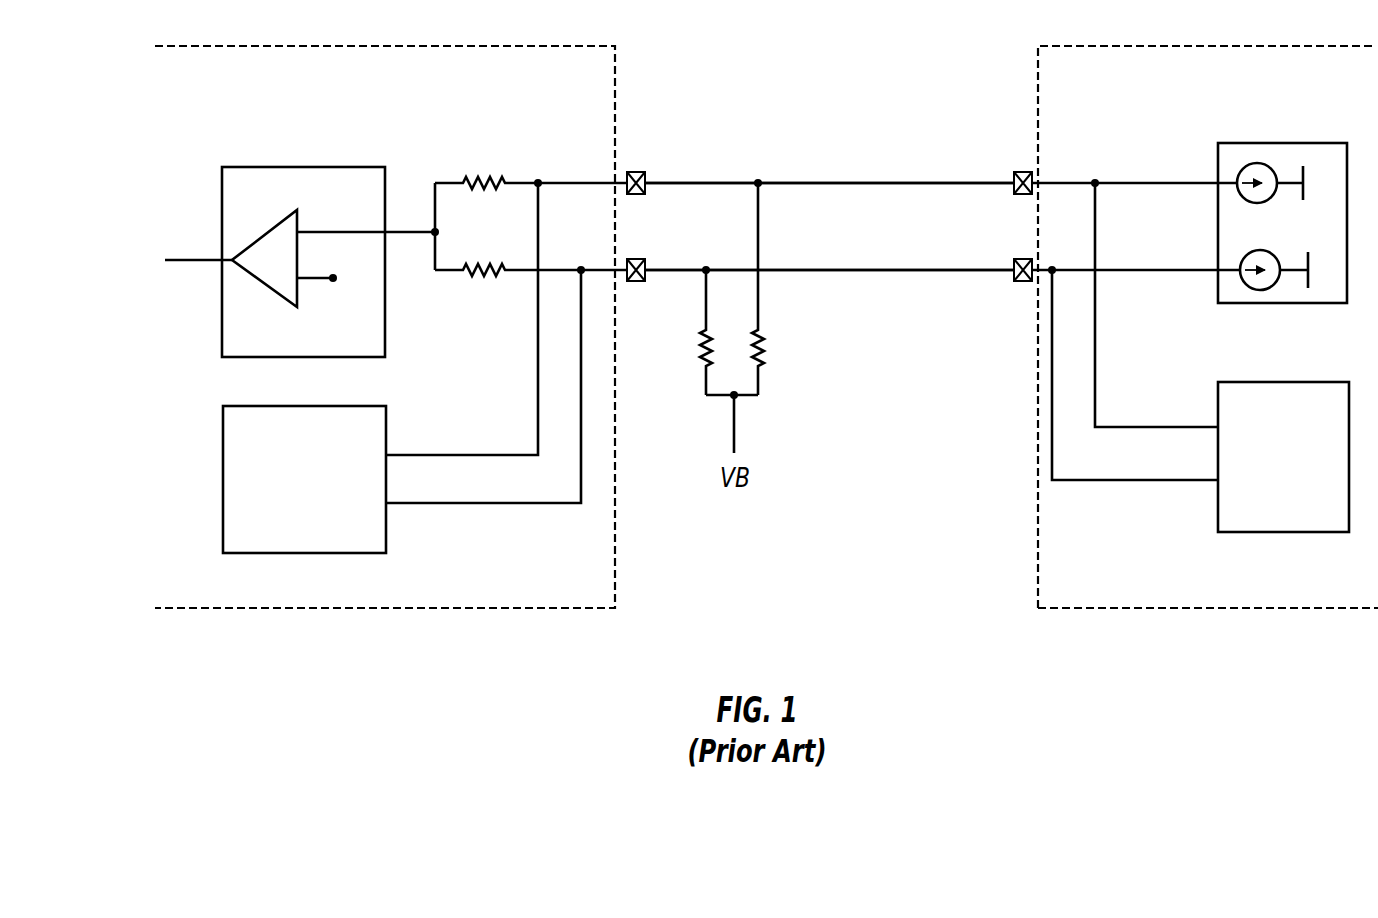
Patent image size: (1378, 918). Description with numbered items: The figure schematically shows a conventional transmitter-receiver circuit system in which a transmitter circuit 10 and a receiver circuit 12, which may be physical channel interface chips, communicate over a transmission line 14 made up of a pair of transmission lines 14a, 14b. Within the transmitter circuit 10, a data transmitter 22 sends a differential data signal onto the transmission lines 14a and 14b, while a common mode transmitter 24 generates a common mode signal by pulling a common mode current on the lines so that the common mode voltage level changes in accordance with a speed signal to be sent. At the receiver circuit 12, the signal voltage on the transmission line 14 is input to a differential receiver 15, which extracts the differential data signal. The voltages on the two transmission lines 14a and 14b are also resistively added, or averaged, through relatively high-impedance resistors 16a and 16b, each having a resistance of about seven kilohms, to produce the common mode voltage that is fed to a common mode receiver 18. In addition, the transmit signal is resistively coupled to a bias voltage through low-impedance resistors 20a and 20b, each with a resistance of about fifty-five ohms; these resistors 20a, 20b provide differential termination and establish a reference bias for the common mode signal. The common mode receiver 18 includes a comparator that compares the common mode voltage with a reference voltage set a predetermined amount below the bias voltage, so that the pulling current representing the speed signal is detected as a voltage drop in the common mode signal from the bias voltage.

The transmitter circuit 10 is at (1039, 560).
The receiver circuit 12 is at (617, 574).
The transmission line 14 is at (830, 179).
The transmission line 14a is at (892, 183).
The transmission line 14b is at (863, 270).
The differential receiver 15 is at (387, 433).
The resistor 16a is at (472, 174).
The resistor 16b is at (480, 280).
The common mode receiver 18 is at (287, 167).
The resistor 20a is at (703, 332).
The resistor 20b is at (758, 332).
The data transmitter 22 is at (1283, 382).
The common mode transmitter 24 is at (1283, 143).